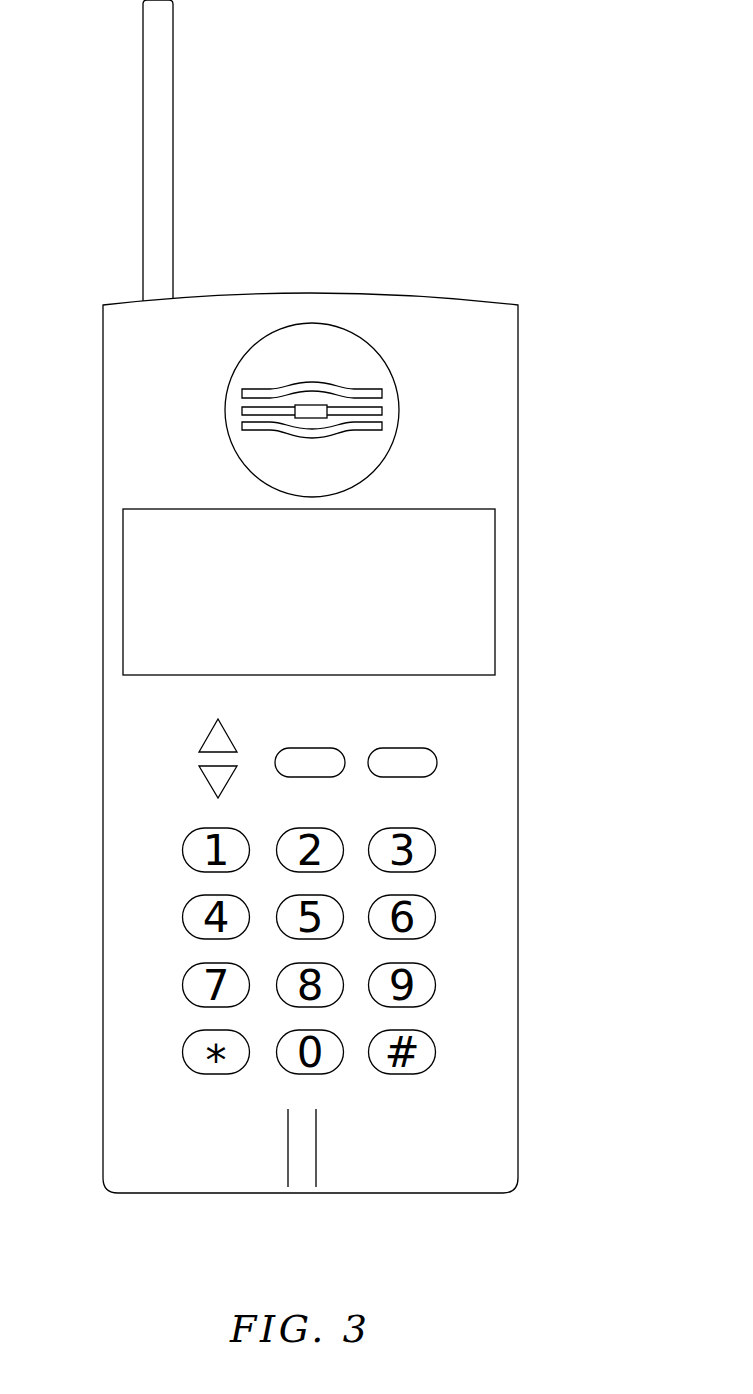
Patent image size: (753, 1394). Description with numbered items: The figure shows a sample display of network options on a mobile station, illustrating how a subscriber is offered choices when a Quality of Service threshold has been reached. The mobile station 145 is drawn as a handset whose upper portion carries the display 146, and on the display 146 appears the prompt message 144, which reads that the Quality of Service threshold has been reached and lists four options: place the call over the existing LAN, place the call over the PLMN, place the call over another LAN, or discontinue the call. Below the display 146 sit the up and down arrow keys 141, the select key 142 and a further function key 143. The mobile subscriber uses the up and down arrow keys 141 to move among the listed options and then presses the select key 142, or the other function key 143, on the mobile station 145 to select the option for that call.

The up and down arrow keys 141 is at (203, 780).
The select key 142 is at (320, 748).
The function key 143 is at (437, 760).
The prompt message 144 is at (87, 513).
The mobile station 145 is at (519, 390).
The display 146 is at (495, 570).